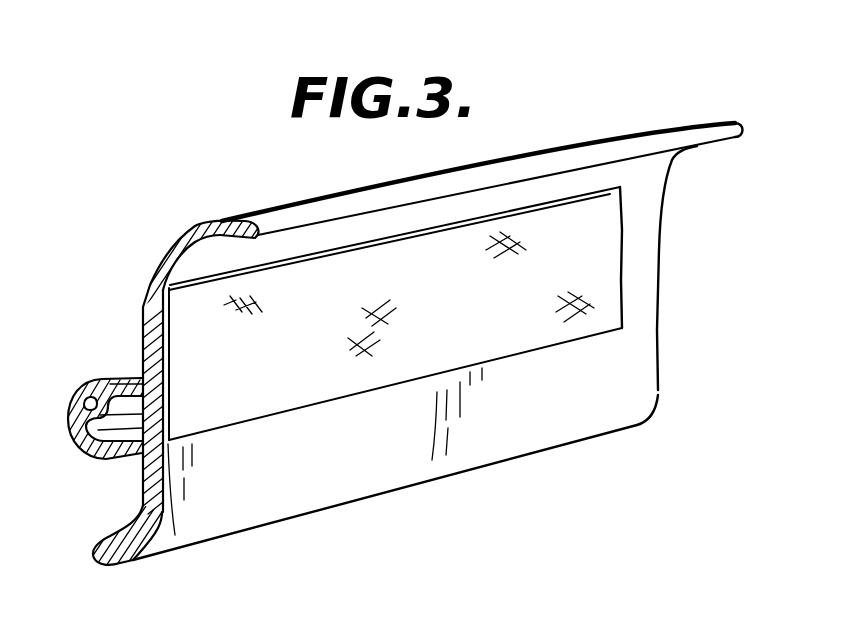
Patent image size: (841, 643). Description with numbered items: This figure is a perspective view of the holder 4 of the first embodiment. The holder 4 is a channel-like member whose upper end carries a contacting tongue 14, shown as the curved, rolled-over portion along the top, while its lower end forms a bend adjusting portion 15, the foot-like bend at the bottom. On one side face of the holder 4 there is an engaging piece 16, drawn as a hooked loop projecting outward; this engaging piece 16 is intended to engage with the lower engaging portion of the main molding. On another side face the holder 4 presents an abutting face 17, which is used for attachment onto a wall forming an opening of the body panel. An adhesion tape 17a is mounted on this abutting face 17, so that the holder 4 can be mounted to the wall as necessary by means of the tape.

The holder 4 is at (609, 138).
The contacting tongue 14 is at (222, 222).
The bend adjusting portion 15 is at (140, 547).
The engaging piece 16 is at (73, 440).
The abutting face 17 is at (344, 452).
The adhesion tape 17a is at (500, 343).